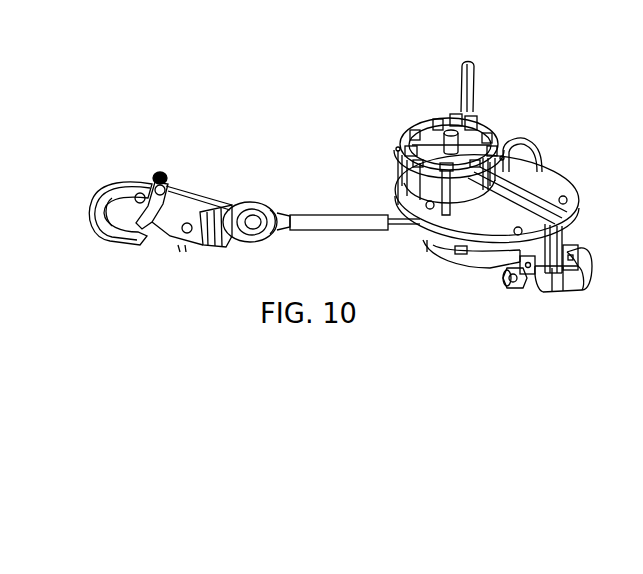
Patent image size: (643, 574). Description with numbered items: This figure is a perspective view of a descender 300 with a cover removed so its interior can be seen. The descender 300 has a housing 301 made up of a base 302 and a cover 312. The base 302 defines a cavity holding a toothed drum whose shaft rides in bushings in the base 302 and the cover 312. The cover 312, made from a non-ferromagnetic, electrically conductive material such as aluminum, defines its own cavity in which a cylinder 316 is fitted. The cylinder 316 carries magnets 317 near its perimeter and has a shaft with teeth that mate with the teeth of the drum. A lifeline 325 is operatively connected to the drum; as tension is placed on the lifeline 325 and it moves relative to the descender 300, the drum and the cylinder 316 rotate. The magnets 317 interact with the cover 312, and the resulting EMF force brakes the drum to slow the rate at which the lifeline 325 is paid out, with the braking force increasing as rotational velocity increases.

The descender 300 is at (557, 140).
The housing 301 is at (462, 259).
The base 302 is at (500, 258).
The cover 312 is at (552, 190).
The cylinder 316 is at (468, 139).
The magnets 317 is at (440, 117).
The lifeline 325 is at (332, 216).